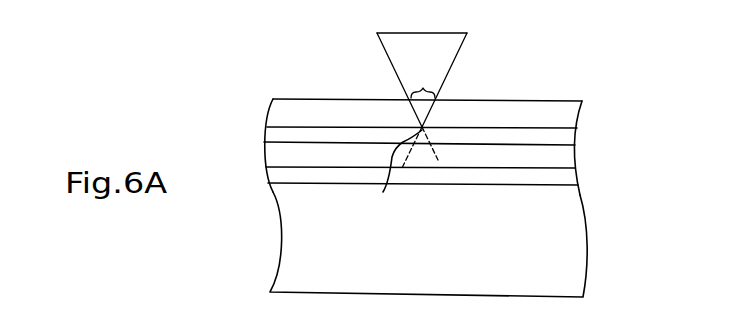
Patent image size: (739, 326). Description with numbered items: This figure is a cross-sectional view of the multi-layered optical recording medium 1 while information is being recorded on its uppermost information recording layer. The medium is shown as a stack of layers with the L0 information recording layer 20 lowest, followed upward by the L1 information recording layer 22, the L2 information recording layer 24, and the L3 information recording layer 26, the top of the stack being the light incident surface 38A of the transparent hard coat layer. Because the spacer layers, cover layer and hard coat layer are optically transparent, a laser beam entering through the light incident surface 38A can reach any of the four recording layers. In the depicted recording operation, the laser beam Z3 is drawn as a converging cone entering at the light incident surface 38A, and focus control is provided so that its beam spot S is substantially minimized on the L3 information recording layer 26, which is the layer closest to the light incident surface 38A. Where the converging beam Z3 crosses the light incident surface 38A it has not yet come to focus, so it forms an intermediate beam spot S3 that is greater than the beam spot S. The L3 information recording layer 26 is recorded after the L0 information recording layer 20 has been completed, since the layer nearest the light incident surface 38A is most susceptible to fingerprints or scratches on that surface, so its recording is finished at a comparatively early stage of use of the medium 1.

The multi-layered optical recording medium 1 is at (462, 154).
The L0 information recording layer 20 is at (557, 185).
The L1 information recording layer 22 is at (558, 165).
The L2 information recording layer 24 is at (555, 146).
The L3 information recording layer 26 is at (557, 127).
The light incident surface 38A is at (507, 100).
The laser beam Z3 is at (422, 85).
The intermediate beam spot S3 is at (423, 77).
The beam spot S is at (383, 192).